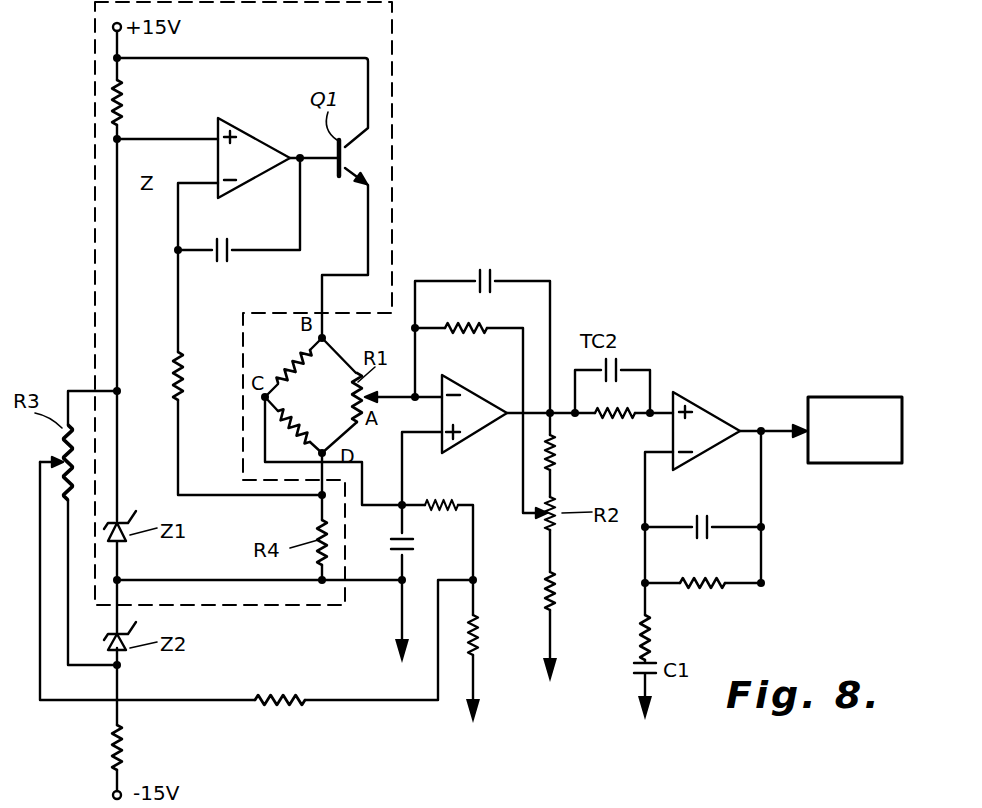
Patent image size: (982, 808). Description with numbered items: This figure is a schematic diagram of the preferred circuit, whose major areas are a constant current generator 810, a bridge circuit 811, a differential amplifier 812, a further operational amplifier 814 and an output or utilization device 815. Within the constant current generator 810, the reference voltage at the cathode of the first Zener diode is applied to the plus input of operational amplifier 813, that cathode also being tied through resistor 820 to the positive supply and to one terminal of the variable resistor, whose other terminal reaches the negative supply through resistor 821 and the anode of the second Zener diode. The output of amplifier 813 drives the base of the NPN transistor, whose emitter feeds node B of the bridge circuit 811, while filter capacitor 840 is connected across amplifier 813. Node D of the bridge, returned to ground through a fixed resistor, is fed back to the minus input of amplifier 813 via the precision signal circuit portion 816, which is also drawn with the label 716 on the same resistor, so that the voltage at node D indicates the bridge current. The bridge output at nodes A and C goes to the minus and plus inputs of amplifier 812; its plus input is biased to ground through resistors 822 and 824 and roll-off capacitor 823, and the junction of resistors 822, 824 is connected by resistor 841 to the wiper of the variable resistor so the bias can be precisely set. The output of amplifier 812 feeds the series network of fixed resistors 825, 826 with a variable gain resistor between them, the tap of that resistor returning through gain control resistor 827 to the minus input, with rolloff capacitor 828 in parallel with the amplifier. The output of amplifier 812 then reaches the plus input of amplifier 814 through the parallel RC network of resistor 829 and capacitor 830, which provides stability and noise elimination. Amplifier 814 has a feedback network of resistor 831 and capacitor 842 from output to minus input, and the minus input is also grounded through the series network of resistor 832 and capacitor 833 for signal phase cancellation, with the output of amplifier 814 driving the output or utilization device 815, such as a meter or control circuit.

The resistor 716 is at (182, 364).
The constant current generator 810 is at (398, 118).
The bridge circuit 811 is at (320, 395).
The differential amplifier 812 is at (493, 378).
The operational amplifier 813 is at (243, 128).
The operational amplifier 814 is at (705, 405).
The output or utilization device 815 is at (842, 395).
The precision signal circuit portion 816 is at (85, 642).
The resistor 820 is at (112, 96).
The resistor 821 is at (113, 745).
The resistor 822 is at (437, 502).
The roll-off capacitor 823 is at (423, 533).
The resistor 824 is at (480, 627).
The fixed resistor 825 is at (552, 452).
The fixed resistor 826 is at (555, 583).
The resistor 827 is at (462, 322).
The rolloff capacitor 828 is at (492, 280).
The resistor 829 is at (613, 420).
The capacitor 830 is at (620, 366).
The resistor 831 is at (698, 592).
The resistor 832 is at (640, 625).
The capacitor 833 is at (642, 676).
The filter capacitor 840 is at (232, 256).
The resistor 841 is at (283, 707).
The capacitor 842 is at (740, 493).